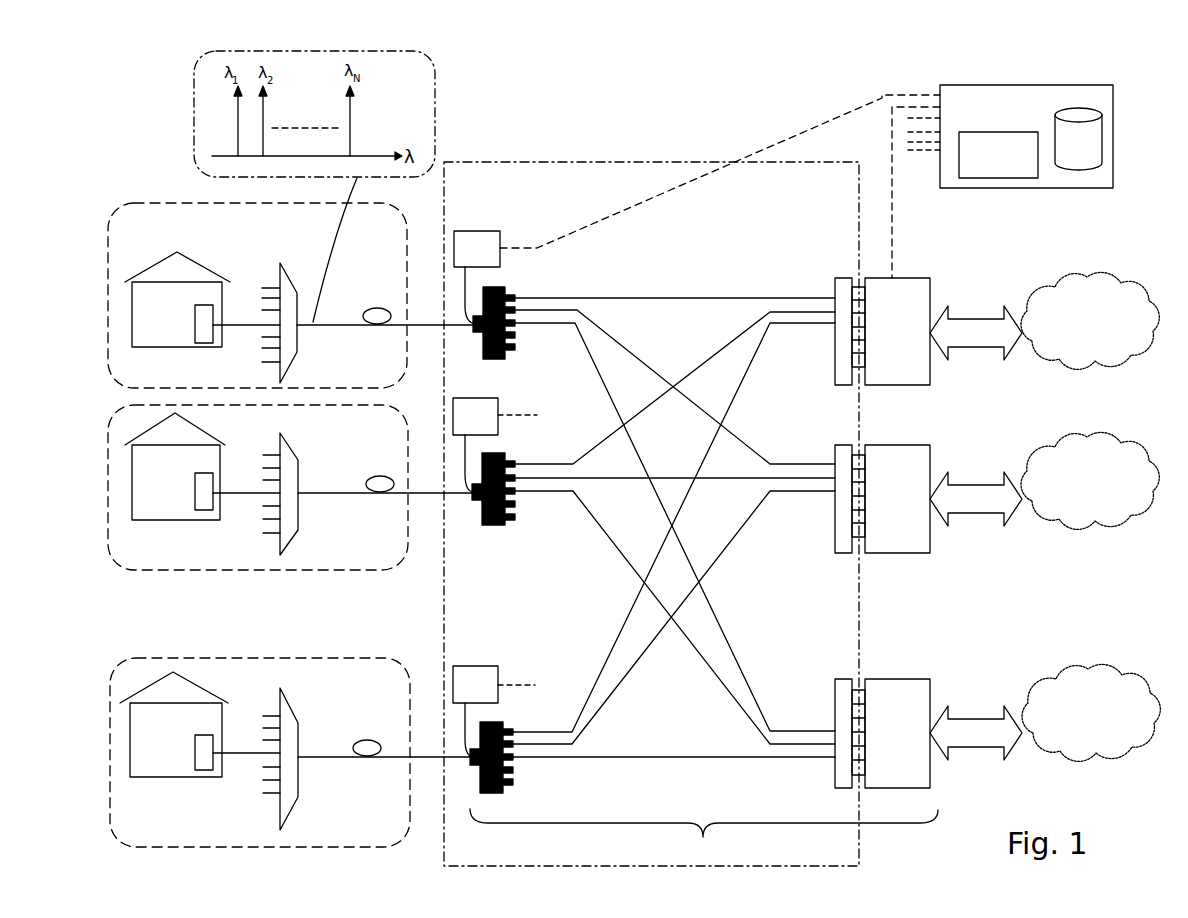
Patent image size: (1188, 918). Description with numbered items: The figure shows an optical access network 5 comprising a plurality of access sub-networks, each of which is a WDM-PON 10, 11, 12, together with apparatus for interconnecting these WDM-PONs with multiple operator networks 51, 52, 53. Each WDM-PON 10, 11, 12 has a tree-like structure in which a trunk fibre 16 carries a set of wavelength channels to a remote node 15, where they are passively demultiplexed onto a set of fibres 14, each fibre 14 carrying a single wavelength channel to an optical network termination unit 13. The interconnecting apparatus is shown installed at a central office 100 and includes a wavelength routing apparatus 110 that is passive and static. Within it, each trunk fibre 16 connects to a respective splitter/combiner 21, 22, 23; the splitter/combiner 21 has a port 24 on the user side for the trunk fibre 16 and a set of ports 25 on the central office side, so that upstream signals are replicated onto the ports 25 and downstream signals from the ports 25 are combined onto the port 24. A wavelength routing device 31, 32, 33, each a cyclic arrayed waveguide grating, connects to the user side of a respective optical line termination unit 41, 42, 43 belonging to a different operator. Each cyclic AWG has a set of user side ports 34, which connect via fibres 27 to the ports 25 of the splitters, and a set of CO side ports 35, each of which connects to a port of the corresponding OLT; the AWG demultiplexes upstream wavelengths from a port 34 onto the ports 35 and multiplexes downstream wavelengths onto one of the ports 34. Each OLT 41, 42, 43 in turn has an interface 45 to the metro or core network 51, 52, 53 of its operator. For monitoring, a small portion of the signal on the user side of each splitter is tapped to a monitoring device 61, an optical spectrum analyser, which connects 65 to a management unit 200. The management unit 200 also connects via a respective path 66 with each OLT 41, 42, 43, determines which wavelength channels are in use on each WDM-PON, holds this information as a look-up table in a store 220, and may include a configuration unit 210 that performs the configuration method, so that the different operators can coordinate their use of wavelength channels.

The optical access network 5 is at (667, 98).
The WDM-PON access sub-network 10 is at (109, 218).
The WDM-PON access sub-network 11 is at (109, 420).
The WDM-PON access sub-network 12 is at (122, 665).
The optical network termination unit 13 is at (213, 314).
The fibre 14 is at (243, 323).
The remote node 15 is at (284, 291).
The trunk fibre 16 is at (341, 322).
The splitter/combiner 21 is at (512, 312).
The splitter/combiner 22 is at (502, 454).
The splitter/combiner 23 is at (502, 722).
The user side port 24 is at (476, 328).
The CO side ports 25 is at (516, 297).
The fibres 27 is at (712, 298).
The wavelength routing device 31 is at (842, 296).
The wavelength routing device 32 is at (840, 445).
The wavelength routing device 33 is at (845, 679).
The user side ports 34 is at (833, 298).
The CO side ports 35 is at (860, 287).
The optical line termination unit 41 is at (906, 278).
The optical line termination unit 42 is at (934, 445).
The optical line termination unit 43 is at (934, 679).
The interface 45 is at (975, 319).
The operator network 51 is at (1090, 320).
The operator network 52 is at (1090, 480).
The operator network 53 is at (1091, 712).
The monitoring device 61 is at (470, 231).
The connection 65 is at (513, 248).
The path 66 is at (890, 170).
The central office 100 is at (704, 835).
The wavelength routing apparatus 110 is at (500, 162).
The management unit 200 is at (1041, 136).
The configuration unit 210 is at (998, 155).
The store 220 is at (1102, 130).